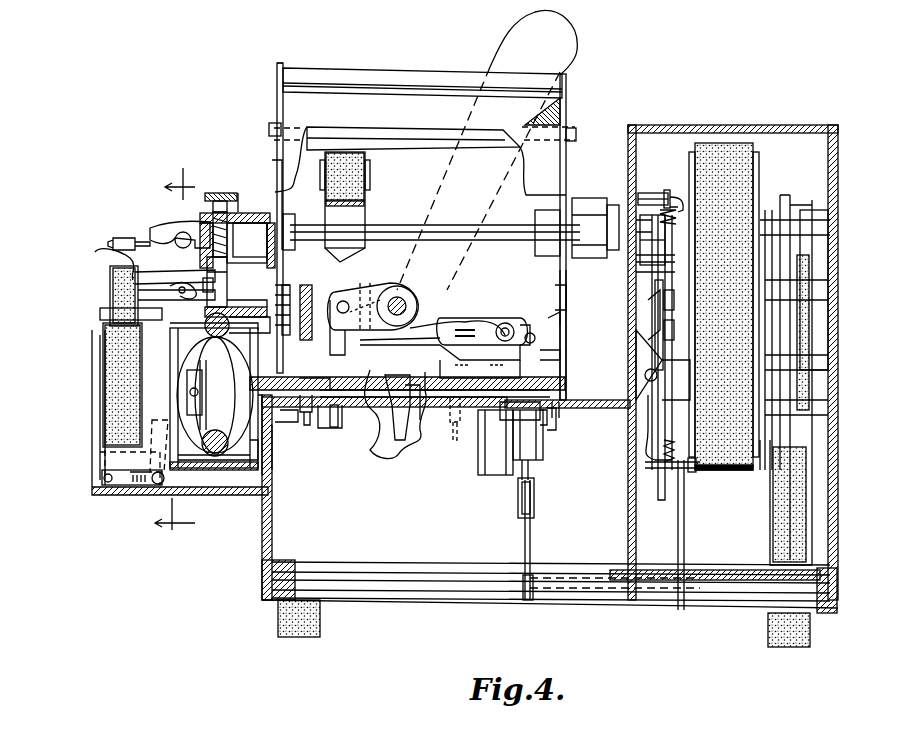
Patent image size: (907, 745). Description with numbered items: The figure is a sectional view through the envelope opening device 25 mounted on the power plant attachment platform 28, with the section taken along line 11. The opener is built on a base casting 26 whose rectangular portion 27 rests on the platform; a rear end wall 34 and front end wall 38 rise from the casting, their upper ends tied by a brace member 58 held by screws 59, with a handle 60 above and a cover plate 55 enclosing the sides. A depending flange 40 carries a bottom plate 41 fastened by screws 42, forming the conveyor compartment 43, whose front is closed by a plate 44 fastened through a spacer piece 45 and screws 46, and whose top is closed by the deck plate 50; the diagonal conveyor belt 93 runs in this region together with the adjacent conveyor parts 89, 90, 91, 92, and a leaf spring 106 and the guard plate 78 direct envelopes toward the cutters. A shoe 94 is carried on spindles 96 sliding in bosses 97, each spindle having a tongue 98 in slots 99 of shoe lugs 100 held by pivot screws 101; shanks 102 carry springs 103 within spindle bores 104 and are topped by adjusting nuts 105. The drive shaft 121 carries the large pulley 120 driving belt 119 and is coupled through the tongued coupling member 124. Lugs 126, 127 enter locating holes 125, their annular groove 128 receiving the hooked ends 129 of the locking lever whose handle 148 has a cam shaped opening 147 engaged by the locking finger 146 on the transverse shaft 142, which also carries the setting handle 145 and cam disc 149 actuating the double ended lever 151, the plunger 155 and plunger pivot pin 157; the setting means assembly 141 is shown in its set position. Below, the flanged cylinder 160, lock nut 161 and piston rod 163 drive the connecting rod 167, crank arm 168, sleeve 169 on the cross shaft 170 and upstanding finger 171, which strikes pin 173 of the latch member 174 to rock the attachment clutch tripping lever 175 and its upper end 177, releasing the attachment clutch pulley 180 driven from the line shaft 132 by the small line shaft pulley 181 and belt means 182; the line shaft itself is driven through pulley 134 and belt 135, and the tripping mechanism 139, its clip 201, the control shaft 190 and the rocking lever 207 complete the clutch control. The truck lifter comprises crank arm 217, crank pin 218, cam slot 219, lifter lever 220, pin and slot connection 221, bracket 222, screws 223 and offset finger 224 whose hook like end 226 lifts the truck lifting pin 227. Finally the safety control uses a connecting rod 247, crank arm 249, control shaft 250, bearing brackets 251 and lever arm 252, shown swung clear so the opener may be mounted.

The section line 11 is at (187, 348).
The envelope opening device 25 is at (571, 328).
The base casting 26 is at (562, 350).
The rectangular portion 27 is at (565, 382).
The power plant attachment platform 28 is at (570, 400).
The rear end wall 34 is at (562, 302).
The front end wall 38 is at (276, 163).
The depending flange 40 is at (276, 450).
The bottom plate 41 is at (220, 456).
The screws 42 is at (252, 456).
The conveyor compartment 43 is at (186, 356).
The plate 44 is at (195, 378).
The spacer piece 45 is at (255, 480).
The screws 46 is at (110, 456).
The deck plate 50 is at (140, 325).
The cover plate 55 is at (340, 110).
The brace member 58 is at (435, 118).
The screws 59 is at (270, 130).
The handle 60 is at (407, 77).
The guard plate 78 is at (262, 320).
The frame top 89 is at (184, 336).
The wheel 90 is at (228, 356).
The hub 91 is at (188, 385).
The rail 92 is at (286, 372).
The diagonal conveyor belt 93 is at (210, 478).
The shoe 94 is at (110, 308).
The spindles 96 is at (130, 260).
The bosses 97 is at (205, 215).
The tongue 98 is at (210, 286).
The slots 99 is at (228, 288).
The shoe lugs 100 is at (228, 300).
The pivot screws 101 is at (162, 290).
The shanks 102 is at (180, 237).
The springs 103 is at (200, 222).
The spindle bores 104 is at (240, 252).
The adjusting nuts 105 is at (252, 187).
The leaf spring 106 is at (300, 300).
The belt 119 is at (355, 190).
The large pulley 120 is at (360, 215).
The drive shaft 121 is at (495, 232).
The tongued coupling member 124 is at (600, 205).
The locating holes 125 is at (300, 410).
The lug 126 is at (334, 428).
The rear lug 127 is at (480, 475).
The annular groove 128 is at (326, 435).
The hooked ends 129 is at (318, 378).
The line shaft 132 is at (650, 432).
The pulley 134 is at (812, 511).
The belt 135 is at (800, 492).
The tripping mechanism 139 is at (661, 180).
The lever assembly 141 is at (489, 296).
The transverse shaft 142 is at (410, 305).
The setting handle 145 is at (573, 52).
The locking finger 146 is at (395, 445).
The cam shaped opening 147 is at (398, 425).
The handle 148 is at (416, 424).
The cam disc 149 is at (396, 290).
The double ended lever 151 is at (462, 322).
The plunger 155 is at (562, 410).
The plunger pivot pin 157 is at (563, 320).
The flanged cylinder 160 is at (557, 430).
The lock nut 161 is at (560, 425).
The piston rod 163 is at (530, 467).
The connecting rod 167 is at (531, 540).
The crank arm 168 is at (528, 602).
The sleeve 169 is at (580, 600).
The cross shaft 170 is at (460, 588).
The upstanding finger 171 is at (686, 556).
The pin 173 is at (690, 472).
The latch member 174 is at (660, 500).
The attachment clutch tripping lever 175 is at (683, 397).
The upper end 177 is at (672, 300).
The attachment clutch pulley 180 is at (759, 165).
The small line shaft pulley 181 is at (758, 470).
The belt means 182 is at (752, 150).
The control shaft 190 is at (675, 345).
The spring clip 201 is at (680, 200).
The rocking lever 207 is at (535, 512).
The crank arm 217 is at (342, 298).
The crank pin 218 is at (371, 288).
The cam slot 219 is at (336, 352).
The lifter lever 220 is at (447, 330).
The pin and slot connection 221 is at (514, 332).
The bracket 222 is at (536, 333).
The screws 223 is at (508, 372).
The offset finger 224 is at (288, 288).
The hook like end 226 is at (124, 292).
The truck lifting pin 227 is at (125, 276).
The connecting rod 247 is at (100, 482).
The crank arm 249 is at (125, 486).
The control shaft 250 is at (160, 486).
The bearing brackets 251 is at (148, 488).
The lever arm 252 is at (162, 422).